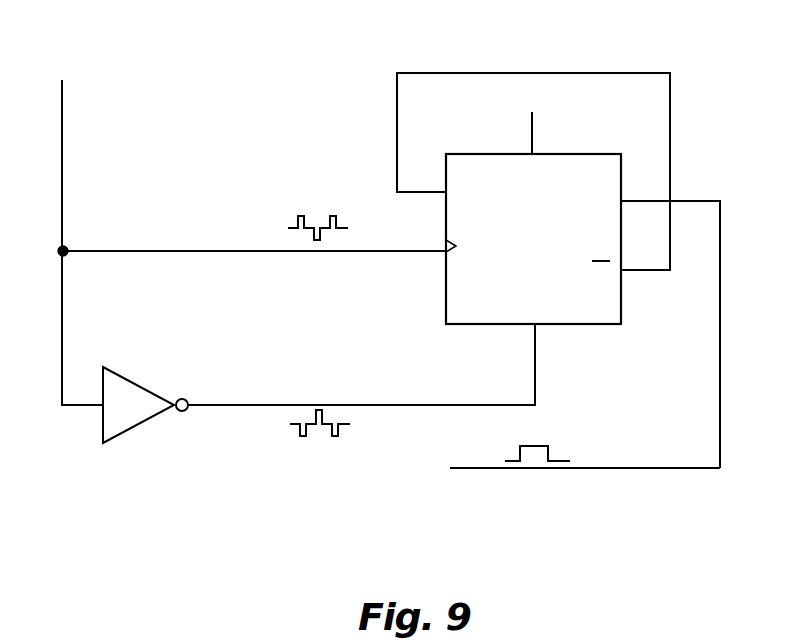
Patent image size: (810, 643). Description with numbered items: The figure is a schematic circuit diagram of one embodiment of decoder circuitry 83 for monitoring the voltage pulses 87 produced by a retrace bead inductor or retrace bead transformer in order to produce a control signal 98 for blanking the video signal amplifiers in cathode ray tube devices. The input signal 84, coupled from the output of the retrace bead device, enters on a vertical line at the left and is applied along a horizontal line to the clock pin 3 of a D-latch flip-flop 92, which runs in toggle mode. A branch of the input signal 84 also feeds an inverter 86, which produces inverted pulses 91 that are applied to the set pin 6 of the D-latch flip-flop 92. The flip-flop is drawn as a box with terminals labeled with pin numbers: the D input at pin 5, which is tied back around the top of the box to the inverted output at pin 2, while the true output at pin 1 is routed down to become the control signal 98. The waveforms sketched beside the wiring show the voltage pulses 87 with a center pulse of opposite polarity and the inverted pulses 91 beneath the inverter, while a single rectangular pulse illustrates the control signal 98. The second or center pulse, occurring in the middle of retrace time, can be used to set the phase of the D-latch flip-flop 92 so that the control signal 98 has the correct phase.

The input signal 84 is at (62, 106).
The voltage pulses 87 is at (334, 220).
The inverter 86 is at (103, 420).
The decoder circuitry 83 is at (132, 524).
The inverted pulses 91 is at (303, 430).
The D-latch flip-flop 92 is at (595, 324).
The control signal 98 is at (478, 470).
The D input terminal 5 is at (533, 171).
The clock pin 3 is at (423, 233).
The Q output terminal 1 is at (670, 319).
The Q-bar output terminal 2 is at (645, 254).
The set pin 6 is at (361, 364).